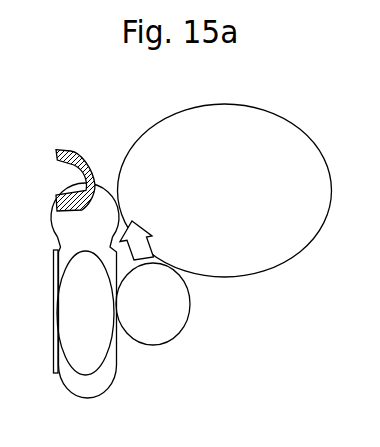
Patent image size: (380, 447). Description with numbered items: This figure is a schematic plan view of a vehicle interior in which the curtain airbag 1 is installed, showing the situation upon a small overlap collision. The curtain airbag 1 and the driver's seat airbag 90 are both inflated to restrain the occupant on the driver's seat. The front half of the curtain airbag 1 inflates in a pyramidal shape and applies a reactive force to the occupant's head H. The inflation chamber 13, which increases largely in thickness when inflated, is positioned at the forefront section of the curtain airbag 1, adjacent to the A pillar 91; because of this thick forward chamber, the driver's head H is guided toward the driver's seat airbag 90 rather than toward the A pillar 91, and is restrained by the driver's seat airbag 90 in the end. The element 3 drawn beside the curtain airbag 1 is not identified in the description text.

The curtain airbag 1 is at (125, 383).
The shield plate 3 is at (51, 258).
The inflation chamber 13 is at (73, 227).
The driver's seat airbag 90 is at (270, 132).
The A pillar 91 is at (75, 155).
The occupant's head H is at (172, 325).